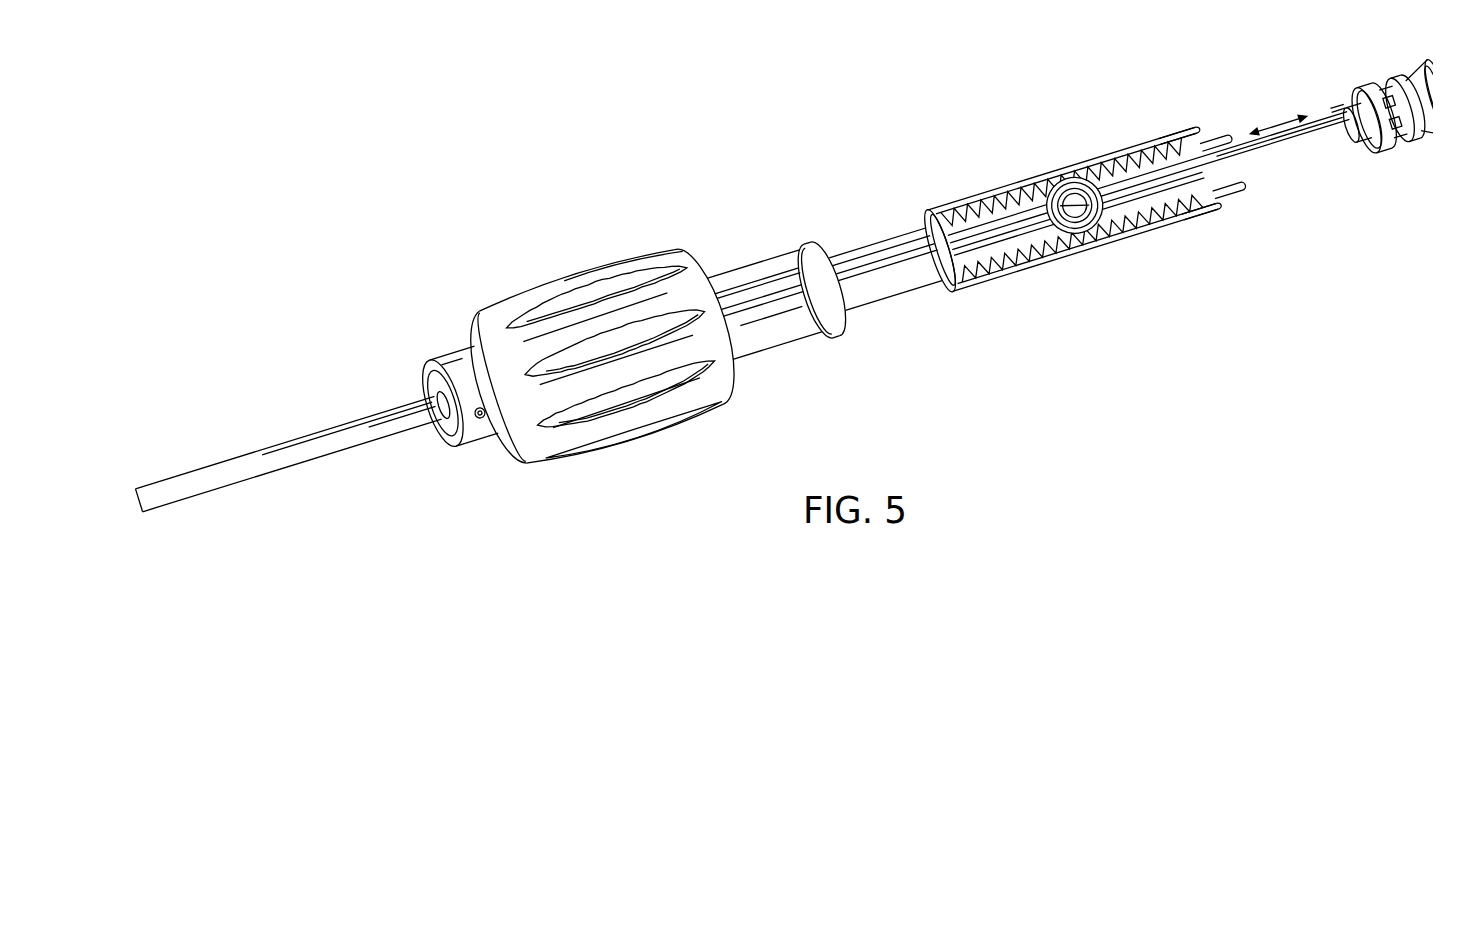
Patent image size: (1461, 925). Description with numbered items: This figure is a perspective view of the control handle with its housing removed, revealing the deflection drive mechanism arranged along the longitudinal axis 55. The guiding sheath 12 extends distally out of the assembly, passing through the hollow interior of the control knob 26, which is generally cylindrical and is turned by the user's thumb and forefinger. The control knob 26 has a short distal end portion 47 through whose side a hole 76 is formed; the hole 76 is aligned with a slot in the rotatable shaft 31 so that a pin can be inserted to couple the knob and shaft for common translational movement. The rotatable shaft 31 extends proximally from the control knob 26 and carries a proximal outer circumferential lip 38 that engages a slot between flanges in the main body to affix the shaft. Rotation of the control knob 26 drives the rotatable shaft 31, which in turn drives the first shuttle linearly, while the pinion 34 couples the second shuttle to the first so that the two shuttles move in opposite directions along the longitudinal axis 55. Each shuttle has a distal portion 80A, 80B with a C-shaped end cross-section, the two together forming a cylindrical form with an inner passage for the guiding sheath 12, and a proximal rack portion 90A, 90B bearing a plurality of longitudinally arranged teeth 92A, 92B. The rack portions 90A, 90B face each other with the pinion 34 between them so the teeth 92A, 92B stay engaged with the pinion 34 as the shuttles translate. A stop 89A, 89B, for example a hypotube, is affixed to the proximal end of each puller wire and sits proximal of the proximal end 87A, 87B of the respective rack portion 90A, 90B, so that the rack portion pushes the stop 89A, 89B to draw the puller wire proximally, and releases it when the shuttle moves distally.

The guiding sheath 12 is at (309, 433).
The distal end portion 47 is at (445, 357).
The hole 76 is at (482, 422).
The control knob 26 is at (568, 280).
The rotatable shaft 31 is at (776, 351).
The proximal outer circumferential lip 38 is at (810, 239).
The distal portion 80A is at (891, 299).
The distal portion 80B is at (874, 243).
The proximal rack portion 90A is at (1010, 276).
The proximal rack portion 90B is at (998, 189).
The teeth 92A is at (1184, 208).
The teeth 92B is at (1132, 152).
The proximal end 87A is at (1220, 205).
The proximal end 87B is at (1186, 128).
The stop 89A is at (1236, 188).
The stop 89B is at (1218, 138).
The longitudinal axis 55 is at (1297, 120).
The pinion 34 is at (1085, 233).